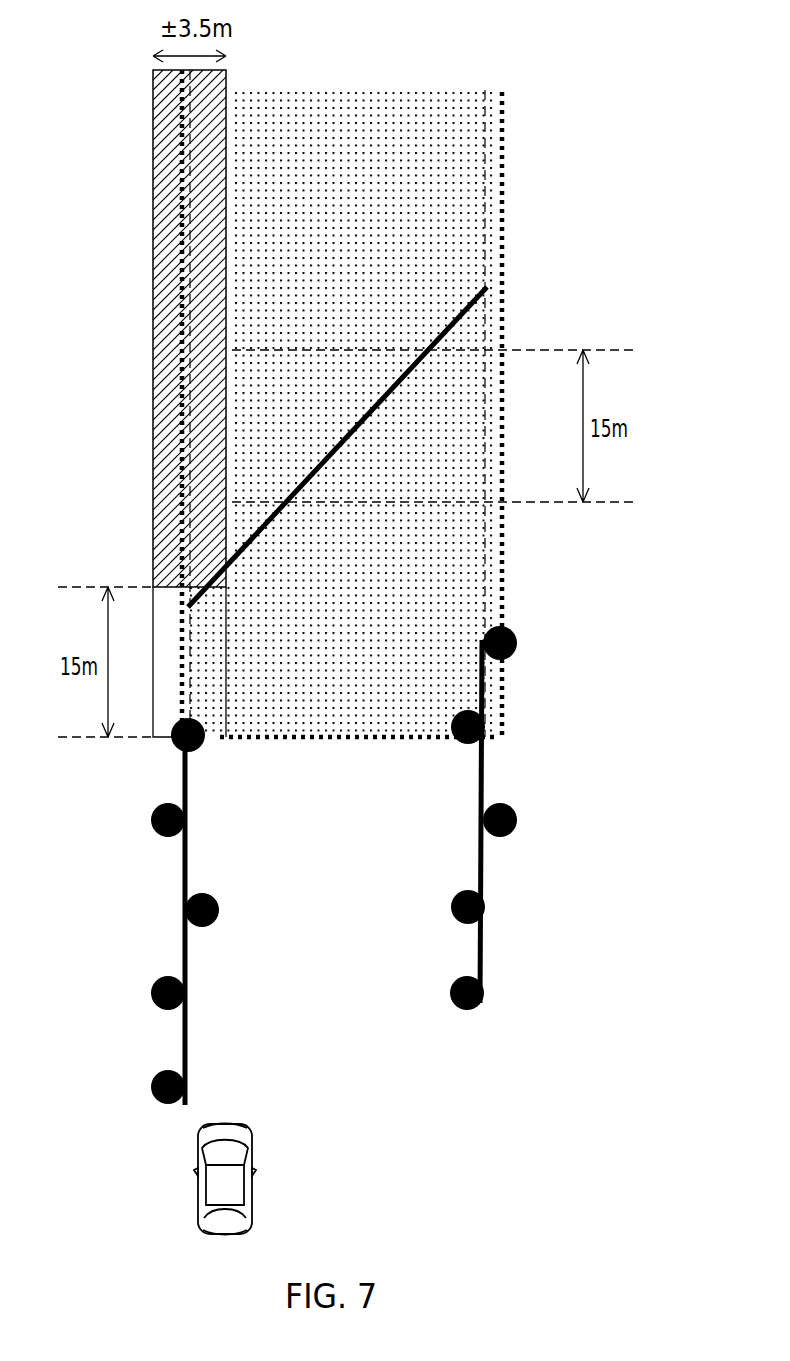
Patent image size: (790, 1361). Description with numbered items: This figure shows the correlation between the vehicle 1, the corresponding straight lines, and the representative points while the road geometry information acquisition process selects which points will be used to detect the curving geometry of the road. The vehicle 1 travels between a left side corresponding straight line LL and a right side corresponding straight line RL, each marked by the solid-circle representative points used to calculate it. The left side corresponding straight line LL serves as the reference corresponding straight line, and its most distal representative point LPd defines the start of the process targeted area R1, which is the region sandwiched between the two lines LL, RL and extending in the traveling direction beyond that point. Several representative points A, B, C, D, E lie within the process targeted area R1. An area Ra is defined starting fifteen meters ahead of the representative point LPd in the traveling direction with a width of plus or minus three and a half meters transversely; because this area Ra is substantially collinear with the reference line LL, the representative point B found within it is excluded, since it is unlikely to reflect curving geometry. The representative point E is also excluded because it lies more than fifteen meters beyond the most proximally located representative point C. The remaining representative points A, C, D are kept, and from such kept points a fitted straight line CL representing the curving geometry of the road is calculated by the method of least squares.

The area Ra is at (153, 262).
The process targeted area R1 is at (502, 272).
The fitted straight line CL is at (468, 305).
The representative point LPd is at (173, 752).
The left side corresponding straight line LL is at (185, 1043).
The right side corresponding straight line RL is at (482, 950).
The vehicle 1 is at (250, 1142).
The representative point A is at (377, 392).
The representative point B is at (207, 369).
The representative point C is at (312, 502).
The representative point D is at (325, 434).
The representative point E is at (343, 413).